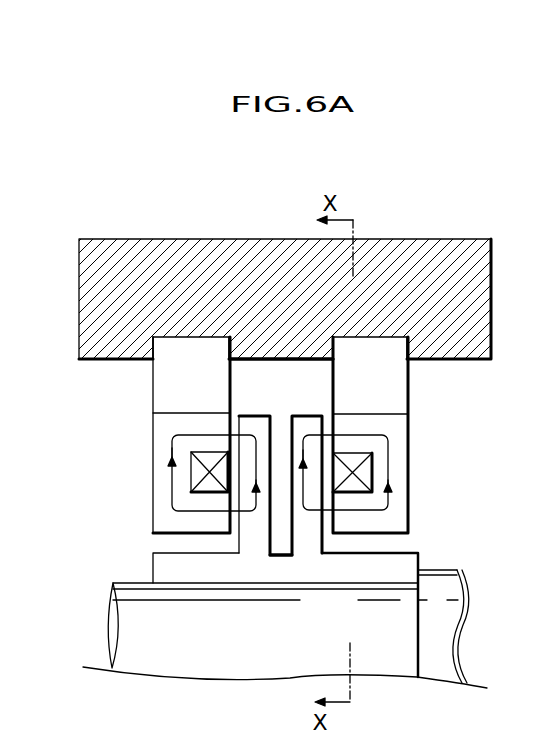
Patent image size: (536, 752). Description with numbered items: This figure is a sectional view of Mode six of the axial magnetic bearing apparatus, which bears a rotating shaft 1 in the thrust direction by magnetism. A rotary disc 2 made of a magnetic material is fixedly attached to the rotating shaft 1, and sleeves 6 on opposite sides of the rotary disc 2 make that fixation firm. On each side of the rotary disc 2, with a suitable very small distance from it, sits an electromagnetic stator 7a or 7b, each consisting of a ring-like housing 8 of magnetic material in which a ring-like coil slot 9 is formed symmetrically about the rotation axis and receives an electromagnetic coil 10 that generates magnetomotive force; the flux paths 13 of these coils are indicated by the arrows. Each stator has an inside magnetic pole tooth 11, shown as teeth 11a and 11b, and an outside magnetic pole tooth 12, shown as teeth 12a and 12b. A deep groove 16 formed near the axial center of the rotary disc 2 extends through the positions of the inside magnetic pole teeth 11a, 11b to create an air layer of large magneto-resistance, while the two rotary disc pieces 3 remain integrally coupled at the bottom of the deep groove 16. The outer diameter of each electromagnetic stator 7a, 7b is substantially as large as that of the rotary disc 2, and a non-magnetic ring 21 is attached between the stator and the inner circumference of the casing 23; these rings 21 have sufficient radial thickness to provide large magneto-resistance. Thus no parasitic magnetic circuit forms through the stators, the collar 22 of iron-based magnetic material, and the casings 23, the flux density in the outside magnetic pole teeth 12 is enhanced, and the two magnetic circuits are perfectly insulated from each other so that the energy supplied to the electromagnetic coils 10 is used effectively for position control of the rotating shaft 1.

The rotating shaft 1 is at (135, 609).
The rotary disc 2 is at (323, 410).
The rotary disc pieces 3 is at (255, 428).
The sleeves 6 is at (170, 567).
The electromagnetic stator 7a is at (155, 515).
The electromagnetic stator 7b is at (410, 517).
The ring-like housing 8 is at (173, 418).
The coil slot 9 is at (192, 470).
The electromagnetic coil 10 is at (193, 480).
The inside magnetic pole tooth 11 is at (233, 639).
The inside magnetic pole tooth 11a is at (238, 522).
The inside magnetic pole tooth 11b is at (323, 520).
The outside magnetic pole tooth 12 is at (484, 368).
The outside magnetic pole tooth 12a is at (216, 413).
The outside magnetic pole tooth 12b is at (333, 417).
The magnetic flux path 13 is at (167, 445).
The deep groove 16 is at (288, 555).
The non-magnetic ring 21 is at (190, 347).
The collar 22 is at (277, 347).
The casing 23 is at (118, 255).